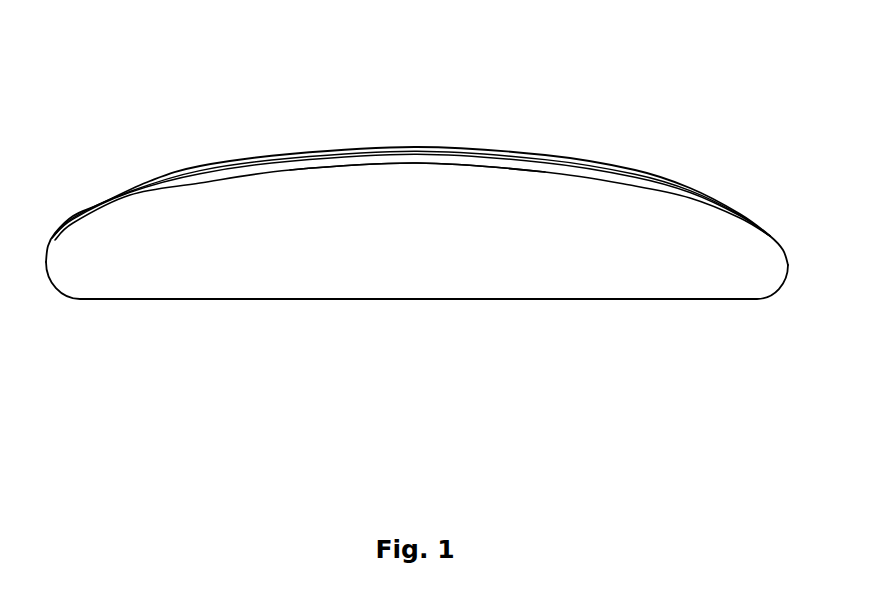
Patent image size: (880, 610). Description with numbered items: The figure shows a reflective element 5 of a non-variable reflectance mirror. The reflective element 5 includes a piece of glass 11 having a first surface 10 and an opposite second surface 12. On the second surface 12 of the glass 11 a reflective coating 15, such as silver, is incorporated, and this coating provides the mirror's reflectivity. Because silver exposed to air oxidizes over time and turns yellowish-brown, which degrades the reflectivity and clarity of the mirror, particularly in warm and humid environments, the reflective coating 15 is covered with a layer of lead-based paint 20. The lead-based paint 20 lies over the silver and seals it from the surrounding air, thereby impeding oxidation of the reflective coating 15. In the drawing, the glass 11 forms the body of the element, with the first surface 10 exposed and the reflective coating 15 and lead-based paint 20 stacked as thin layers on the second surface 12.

The reflective element 5 is at (417, 233).
The first surface 10 is at (370, 165).
The piece of glass 11 is at (458, 240).
The second surface 12 is at (467, 158).
The reflective coating 15 is at (298, 156).
The lead-based paint 20 is at (248, 156).